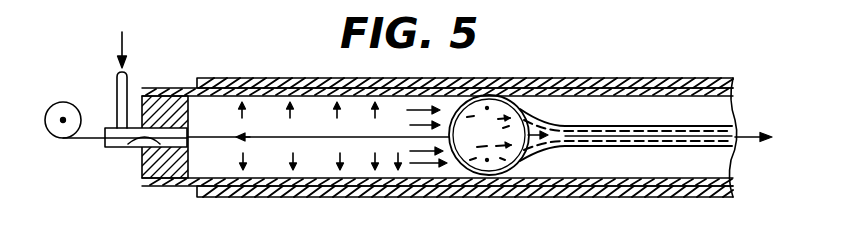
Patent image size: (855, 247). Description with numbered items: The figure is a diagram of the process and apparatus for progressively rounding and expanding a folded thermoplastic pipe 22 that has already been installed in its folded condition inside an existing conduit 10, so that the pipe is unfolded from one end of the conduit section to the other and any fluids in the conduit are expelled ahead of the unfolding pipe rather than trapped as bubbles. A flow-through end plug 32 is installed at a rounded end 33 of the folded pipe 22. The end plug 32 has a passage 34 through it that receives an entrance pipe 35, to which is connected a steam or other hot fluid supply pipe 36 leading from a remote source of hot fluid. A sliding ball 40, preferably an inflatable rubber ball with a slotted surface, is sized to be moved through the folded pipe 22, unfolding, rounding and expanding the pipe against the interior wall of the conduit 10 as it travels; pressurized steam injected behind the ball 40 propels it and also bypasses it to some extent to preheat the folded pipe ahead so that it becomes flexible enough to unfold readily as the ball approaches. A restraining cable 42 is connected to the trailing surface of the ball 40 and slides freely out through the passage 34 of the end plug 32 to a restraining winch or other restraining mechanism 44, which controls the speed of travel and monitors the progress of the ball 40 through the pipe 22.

The existing conduit 10 is at (602, 78).
The folded thermoplastic pipe 22 is at (677, 127).
The flow-through end plug 32 is at (190, 117).
The rounded end 33 is at (155, 88).
The passage 34 is at (132, 145).
The entrance pipe 35 is at (110, 149).
The hot fluid supply pipe 36 is at (117, 84).
The sliding ball 40 is at (447, 100).
The restraining cable 42 is at (313, 137).
The restraining mechanism 44 is at (58, 142).